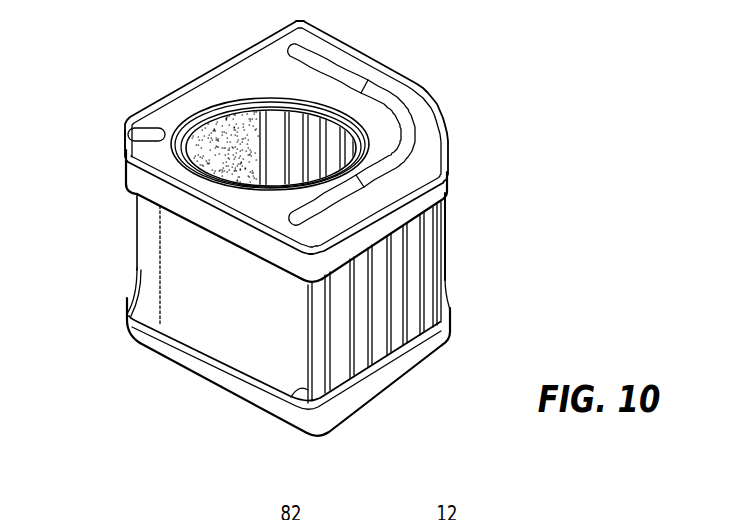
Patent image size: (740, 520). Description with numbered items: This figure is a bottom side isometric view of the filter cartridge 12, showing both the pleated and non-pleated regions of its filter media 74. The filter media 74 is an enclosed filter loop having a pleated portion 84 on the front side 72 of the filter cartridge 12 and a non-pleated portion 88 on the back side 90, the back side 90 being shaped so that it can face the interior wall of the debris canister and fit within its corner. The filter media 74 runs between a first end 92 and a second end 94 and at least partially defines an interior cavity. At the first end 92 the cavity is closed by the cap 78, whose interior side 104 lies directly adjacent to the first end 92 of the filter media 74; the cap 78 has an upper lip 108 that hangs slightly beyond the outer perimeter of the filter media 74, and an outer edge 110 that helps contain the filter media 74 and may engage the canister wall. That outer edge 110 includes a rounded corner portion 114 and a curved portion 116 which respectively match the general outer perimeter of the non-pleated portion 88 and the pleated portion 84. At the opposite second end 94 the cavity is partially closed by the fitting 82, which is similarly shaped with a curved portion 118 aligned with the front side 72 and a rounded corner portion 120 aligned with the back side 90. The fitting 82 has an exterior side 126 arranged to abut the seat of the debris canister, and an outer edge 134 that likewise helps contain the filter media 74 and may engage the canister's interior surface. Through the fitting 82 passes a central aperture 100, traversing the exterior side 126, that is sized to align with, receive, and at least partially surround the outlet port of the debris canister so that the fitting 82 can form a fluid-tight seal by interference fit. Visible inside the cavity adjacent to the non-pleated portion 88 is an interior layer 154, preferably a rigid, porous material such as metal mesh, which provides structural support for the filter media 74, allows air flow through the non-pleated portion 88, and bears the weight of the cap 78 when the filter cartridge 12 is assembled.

The filter cartridge 12 is at (527, 121).
The front side 72 is at (445, 232).
The filter media 74 is at (410, 298).
The cap 78 is at (417, 363).
The fitting 82 is at (377, 80).
The pleated portion 84 is at (440, 262).
The non-pleated portion 88 is at (136, 230).
The back side 90 is at (146, 252).
The first end 92 is at (290, 392).
The second end 94 is at (136, 200).
The central aperture 100 is at (245, 108).
The interior side 104 is at (383, 362).
The upper lip 108 is at (140, 310).
The outer edge 110 is at (126, 310).
The rounded corner portion 114 is at (126, 157).
The curved portion 116 is at (124, 178).
The curved portion 118 is at (437, 113).
The rounded corner portion 120 is at (126, 132).
The exterior side 126 is at (203, 87).
The outer edge 134 is at (443, 182).
The interior layer 154 is at (197, 147).